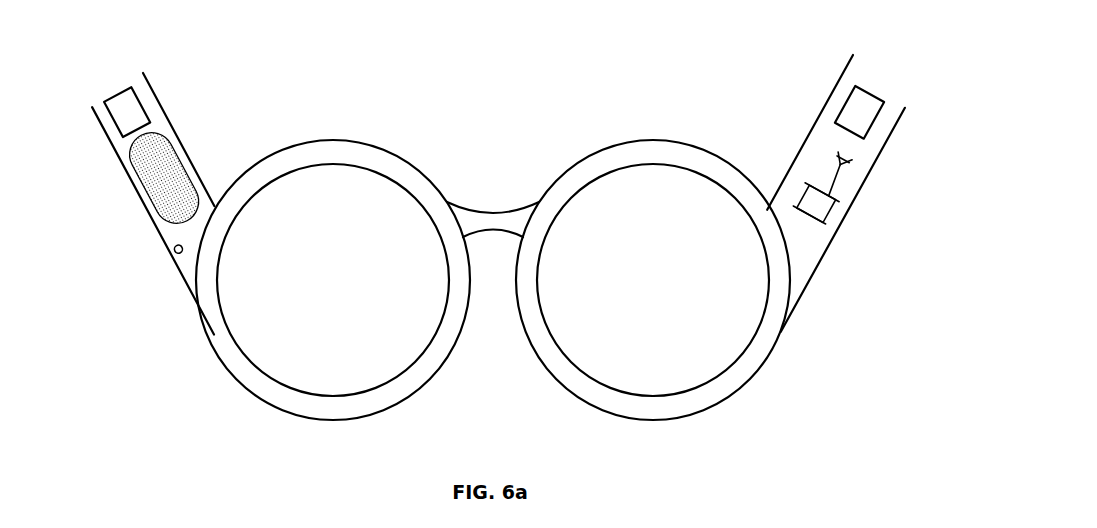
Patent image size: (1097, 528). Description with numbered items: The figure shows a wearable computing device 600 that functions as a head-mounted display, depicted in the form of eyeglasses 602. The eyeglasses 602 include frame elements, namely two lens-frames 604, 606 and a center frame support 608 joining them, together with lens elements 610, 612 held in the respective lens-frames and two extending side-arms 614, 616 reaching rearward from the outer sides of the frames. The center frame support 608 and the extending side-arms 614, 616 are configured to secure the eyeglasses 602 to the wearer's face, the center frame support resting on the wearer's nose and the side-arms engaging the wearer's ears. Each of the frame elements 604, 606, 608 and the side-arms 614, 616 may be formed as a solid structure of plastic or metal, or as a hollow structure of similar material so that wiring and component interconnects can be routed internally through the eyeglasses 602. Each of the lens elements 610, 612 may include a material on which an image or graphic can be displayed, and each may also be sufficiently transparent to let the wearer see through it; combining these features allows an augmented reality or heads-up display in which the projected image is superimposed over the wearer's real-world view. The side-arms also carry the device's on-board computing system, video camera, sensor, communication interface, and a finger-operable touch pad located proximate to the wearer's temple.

The wearable computing device 600 is at (781, 386).
The eyeglasses 602 is at (422, 103).
The lens-frame 604 is at (302, 142).
The lens-frame 606 is at (627, 140).
The center frame support 608 is at (488, 210).
The lens element 610 is at (272, 348).
The lens element 612 is at (595, 368).
The extending side-arm 614 is at (192, 152).
The extending side-arm 616 is at (795, 168).